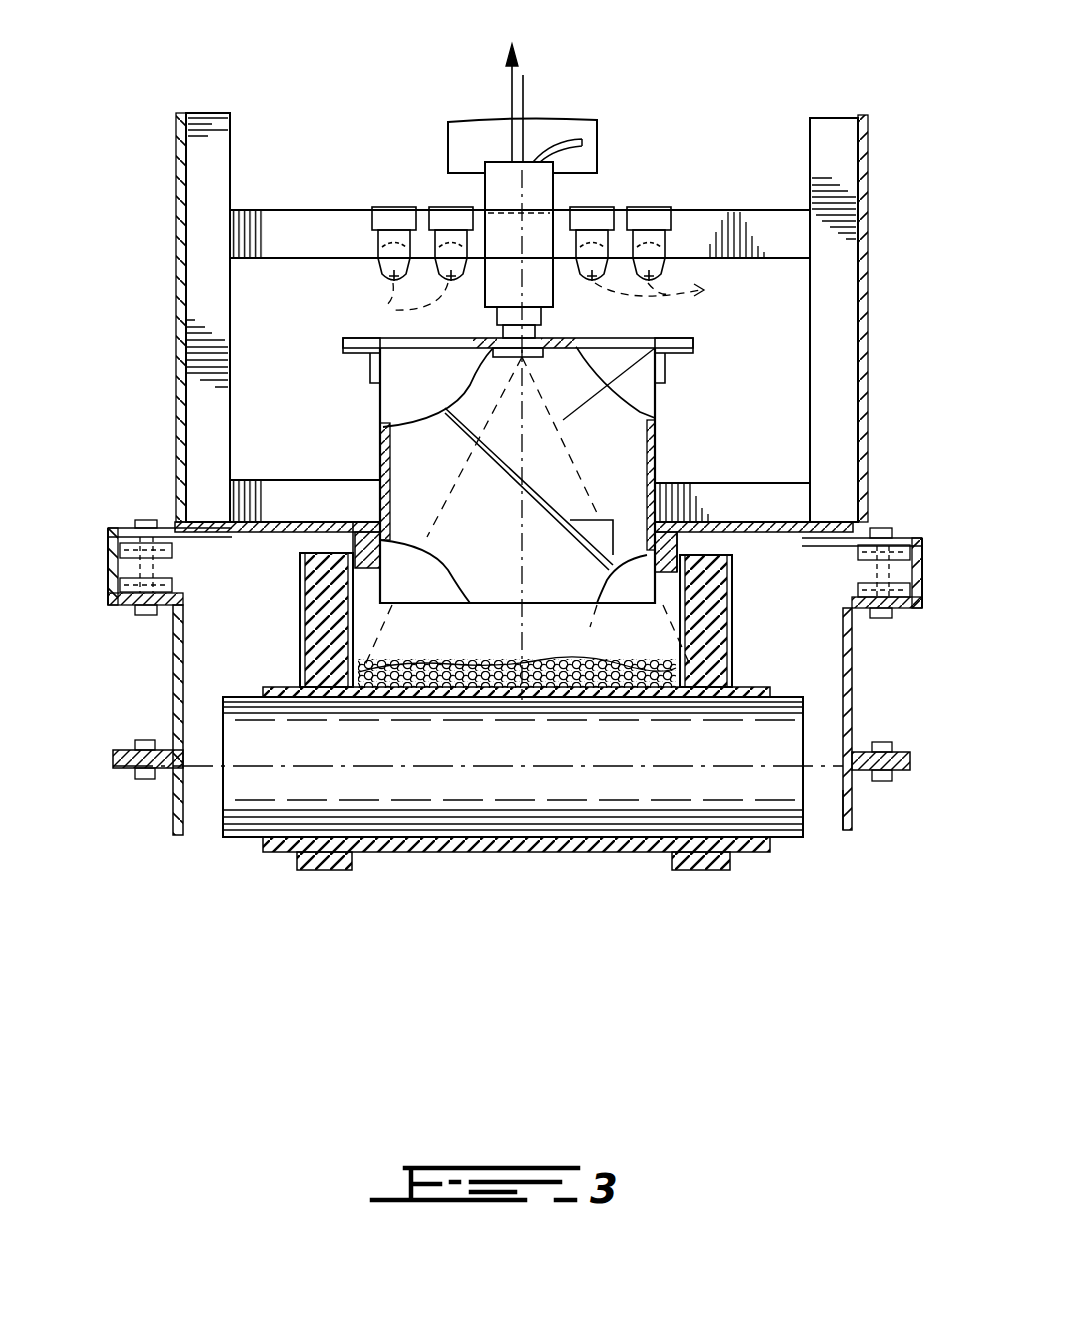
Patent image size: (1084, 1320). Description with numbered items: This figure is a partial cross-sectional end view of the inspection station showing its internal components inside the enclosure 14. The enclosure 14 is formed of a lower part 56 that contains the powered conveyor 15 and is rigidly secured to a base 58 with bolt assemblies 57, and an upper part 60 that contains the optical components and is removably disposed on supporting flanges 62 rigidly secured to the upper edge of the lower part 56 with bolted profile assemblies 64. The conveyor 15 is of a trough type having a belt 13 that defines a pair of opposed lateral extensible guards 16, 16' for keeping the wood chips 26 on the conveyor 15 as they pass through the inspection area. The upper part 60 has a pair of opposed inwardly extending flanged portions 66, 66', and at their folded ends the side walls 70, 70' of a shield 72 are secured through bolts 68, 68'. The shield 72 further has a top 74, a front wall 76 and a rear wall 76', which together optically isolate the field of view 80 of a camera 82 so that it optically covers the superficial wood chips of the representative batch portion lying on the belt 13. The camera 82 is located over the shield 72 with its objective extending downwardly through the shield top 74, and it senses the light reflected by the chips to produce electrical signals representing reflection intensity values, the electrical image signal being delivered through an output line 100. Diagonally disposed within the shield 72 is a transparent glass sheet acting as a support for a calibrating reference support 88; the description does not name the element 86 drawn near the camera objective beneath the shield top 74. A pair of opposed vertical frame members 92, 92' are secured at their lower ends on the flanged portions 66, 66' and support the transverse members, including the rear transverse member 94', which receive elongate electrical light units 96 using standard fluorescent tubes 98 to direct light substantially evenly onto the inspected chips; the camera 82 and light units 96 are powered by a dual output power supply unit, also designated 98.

The belt 13 is at (438, 847).
The enclosure 14 is at (870, 238).
The powered conveyor 15 is at (222, 843).
The lateral extensible guard 16 is at (280, 620).
The lateral extensible guard 16' is at (743, 621).
The wood chips 26 is at (625, 660).
The lower part 56 is at (707, 92).
The bolt assemblies 57 is at (145, 740).
The base 58 is at (853, 800).
The upper part 60 is at (858, 320).
The supporting flanges 62 is at (120, 527).
The bolted profile assemblies 64 is at (163, 568).
The flanged portion 66 is at (305, 454).
The flanged portion 66' is at (732, 459).
The bolts 68 is at (341, 499).
The bolts 68' is at (705, 499).
The side wall 70 is at (316, 381).
The side wall 70' is at (703, 381).
The shield 72 is at (612, 338).
The top 74 is at (560, 340).
The front wall 76 is at (438, 387).
The rear wall 76' is at (513, 527).
The field of view 80 is at (695, 337).
The camera 82 is at (497, 188).
The nozzle outlet 86 is at (486, 338).
The calibrating reference support 88 is at (657, 472).
The vertical frame member 92 is at (224, 263).
The vertical frame member 92' is at (873, 261).
The rear transverse member 94' is at (520, 178).
The electrical light units 96 is at (390, 207).
The fluorescent tubes 98 is at (543, 135).
The output line 100 is at (512, 100).